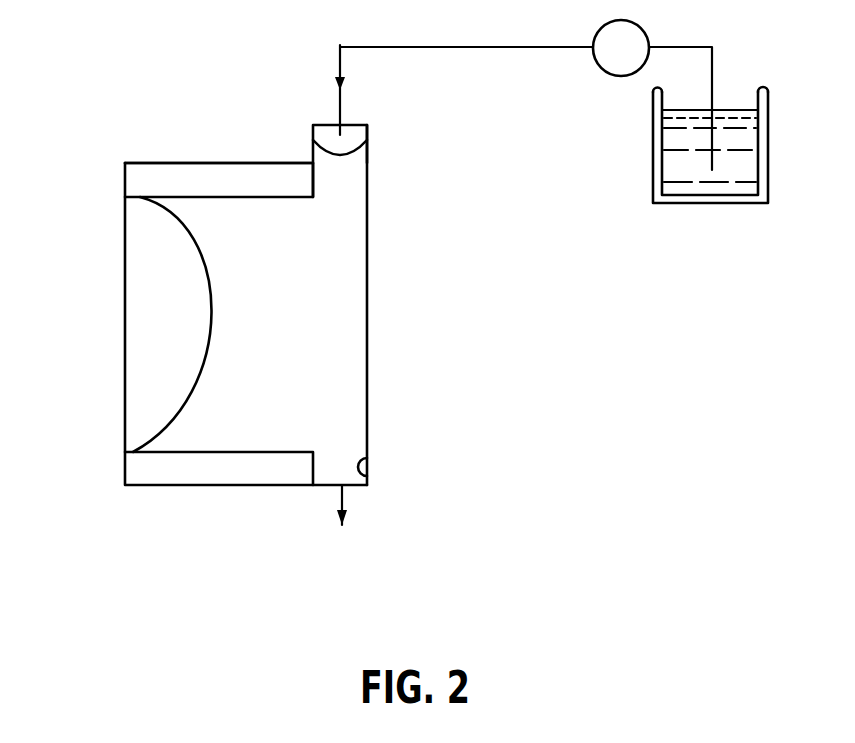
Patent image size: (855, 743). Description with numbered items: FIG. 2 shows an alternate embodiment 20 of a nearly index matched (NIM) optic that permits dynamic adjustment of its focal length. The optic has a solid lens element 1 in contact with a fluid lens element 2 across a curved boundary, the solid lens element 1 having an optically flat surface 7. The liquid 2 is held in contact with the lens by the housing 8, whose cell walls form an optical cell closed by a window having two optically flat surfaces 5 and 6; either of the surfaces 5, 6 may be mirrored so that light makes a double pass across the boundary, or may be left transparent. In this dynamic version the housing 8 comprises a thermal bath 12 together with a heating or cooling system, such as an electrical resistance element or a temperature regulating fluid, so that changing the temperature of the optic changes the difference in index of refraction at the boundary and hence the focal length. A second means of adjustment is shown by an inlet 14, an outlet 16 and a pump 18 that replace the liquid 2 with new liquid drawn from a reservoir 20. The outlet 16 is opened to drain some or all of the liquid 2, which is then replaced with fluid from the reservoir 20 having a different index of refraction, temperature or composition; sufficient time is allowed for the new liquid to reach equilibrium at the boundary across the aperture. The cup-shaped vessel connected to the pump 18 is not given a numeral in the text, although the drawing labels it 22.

The solid lens element 1 is at (147, 233).
The fluid lens element 2 is at (287, 323).
The optically flat surface 5 is at (367, 480).
The optically flat surface 6 is at (368, 423).
The optically flat surface 7 is at (125, 433).
The housing 8 is at (152, 163).
The thermal bath 12 is at (205, 178).
The inlet 14 is at (330, 125).
The outlet 16 is at (340, 487).
The pump 18 is at (634, 62).
The reservoir 20 is at (393, 158).
The reservoir 22 is at (685, 160).